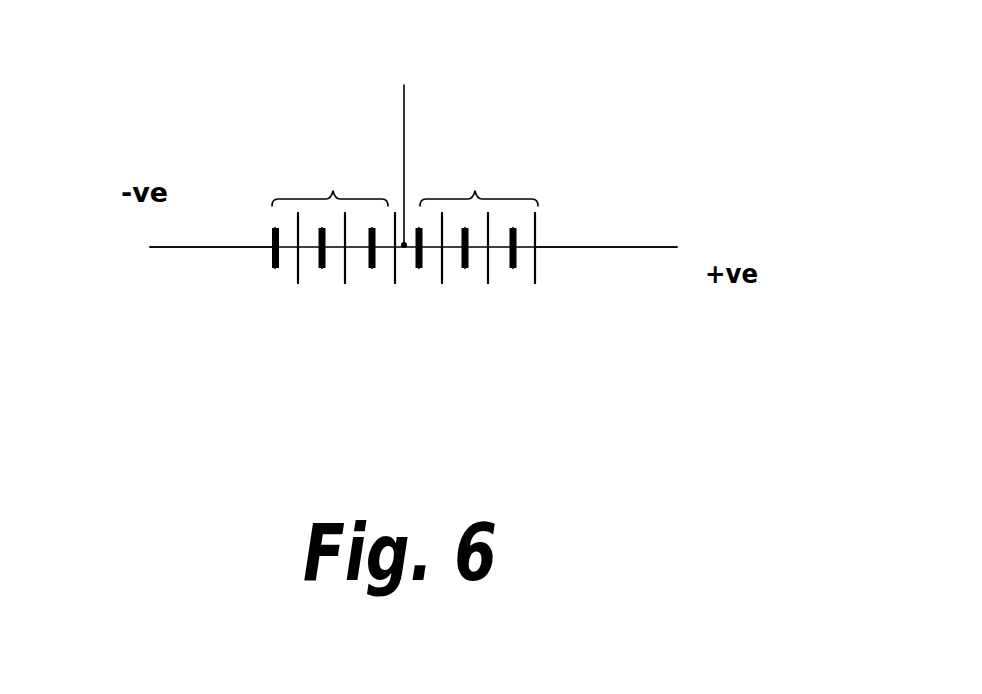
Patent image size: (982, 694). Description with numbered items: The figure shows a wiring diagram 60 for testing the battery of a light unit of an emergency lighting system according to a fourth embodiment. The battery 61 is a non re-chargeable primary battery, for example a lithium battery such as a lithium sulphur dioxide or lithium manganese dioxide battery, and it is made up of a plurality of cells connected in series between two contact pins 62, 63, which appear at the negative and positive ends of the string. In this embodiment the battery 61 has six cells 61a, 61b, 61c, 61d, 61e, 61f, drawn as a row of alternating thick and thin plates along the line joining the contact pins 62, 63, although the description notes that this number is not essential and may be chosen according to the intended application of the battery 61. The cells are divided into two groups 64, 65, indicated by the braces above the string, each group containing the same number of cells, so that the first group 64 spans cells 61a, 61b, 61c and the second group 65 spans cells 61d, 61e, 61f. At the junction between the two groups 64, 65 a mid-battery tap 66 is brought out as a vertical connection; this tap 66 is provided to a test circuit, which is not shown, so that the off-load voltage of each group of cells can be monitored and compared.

The wiring diagram 60 is at (712, 125).
The battery 61 is at (203, 448).
The cell 61a is at (278, 280).
The cell 61b is at (323, 280).
The cell 61c is at (365, 280).
The cell 61d is at (418, 280).
The cell 61e is at (467, 280).
The cell 61f is at (513, 280).
The contact pin 62 is at (152, 251).
The contact pin 63 is at (677, 246).
The first group of cells 64 is at (333, 190).
The second group of cells 65 is at (475, 190).
The mid-battery tap 66 is at (404, 108).